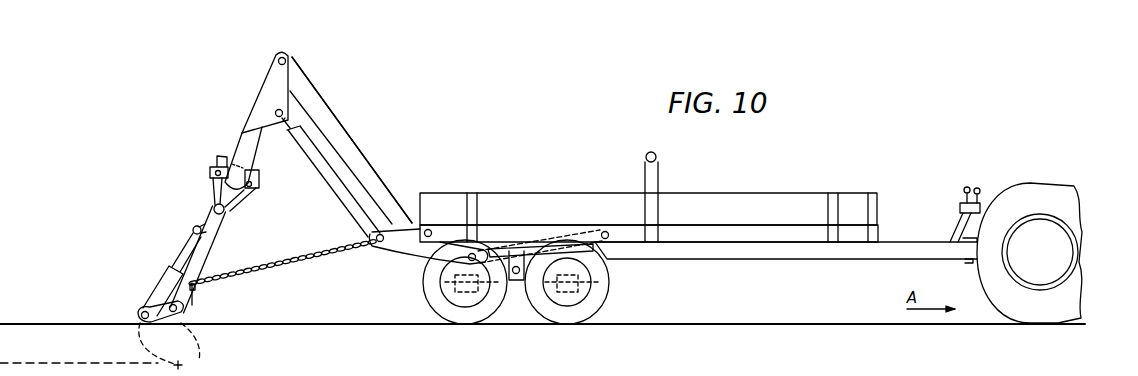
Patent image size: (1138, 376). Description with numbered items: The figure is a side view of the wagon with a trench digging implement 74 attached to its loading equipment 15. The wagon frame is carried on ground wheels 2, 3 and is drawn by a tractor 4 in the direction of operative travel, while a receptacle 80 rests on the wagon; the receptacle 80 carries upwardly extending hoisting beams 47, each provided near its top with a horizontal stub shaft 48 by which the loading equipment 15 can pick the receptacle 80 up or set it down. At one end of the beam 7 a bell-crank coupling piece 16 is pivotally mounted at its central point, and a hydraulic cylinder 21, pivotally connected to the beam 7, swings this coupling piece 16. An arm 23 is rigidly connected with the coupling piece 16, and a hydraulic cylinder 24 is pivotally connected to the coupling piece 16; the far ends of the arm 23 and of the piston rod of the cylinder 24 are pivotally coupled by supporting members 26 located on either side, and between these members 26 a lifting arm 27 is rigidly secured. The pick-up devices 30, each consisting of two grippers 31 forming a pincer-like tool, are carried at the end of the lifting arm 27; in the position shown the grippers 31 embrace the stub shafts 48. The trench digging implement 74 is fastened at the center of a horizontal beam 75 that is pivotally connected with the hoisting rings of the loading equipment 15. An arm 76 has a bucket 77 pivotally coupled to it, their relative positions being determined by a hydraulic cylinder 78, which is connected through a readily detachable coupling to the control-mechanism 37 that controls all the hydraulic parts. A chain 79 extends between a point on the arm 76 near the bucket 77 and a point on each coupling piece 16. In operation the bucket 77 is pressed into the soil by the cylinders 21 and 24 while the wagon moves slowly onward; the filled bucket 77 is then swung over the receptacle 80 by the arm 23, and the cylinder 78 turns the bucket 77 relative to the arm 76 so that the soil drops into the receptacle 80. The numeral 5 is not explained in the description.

The ground wheel 2 is at (598, 303).
The ground wheel 3 is at (432, 303).
The tractor 4 is at (1067, 203).
The trailer frame 5 is at (861, 258).
The beam 7 is at (758, 240).
The loading equipment 15 is at (322, 94).
The bell-crank coupling piece 16 is at (415, 255).
The hydraulic cylinder 21 is at (561, 236).
The arm 23 is at (340, 135).
The hydraulic cylinder 24 is at (334, 188).
The supporting member 26 is at (262, 87).
The lifting arm 27 is at (237, 147).
The pick-up device 30 is at (251, 174).
The gripper 31 is at (212, 185).
The control-mechanism 37 is at (960, 210).
The hoisting beam 47 is at (645, 173).
The stub shaft 48 is at (656, 157).
The trench digging implement 74 is at (187, 230).
The horizontal beam 75 is at (222, 228).
The arm 76 is at (206, 263).
The bucket 77 is at (192, 367).
The hydraulic cylinder 78 is at (166, 268).
The chain 79 is at (283, 263).
The receptacle 80 is at (772, 197).